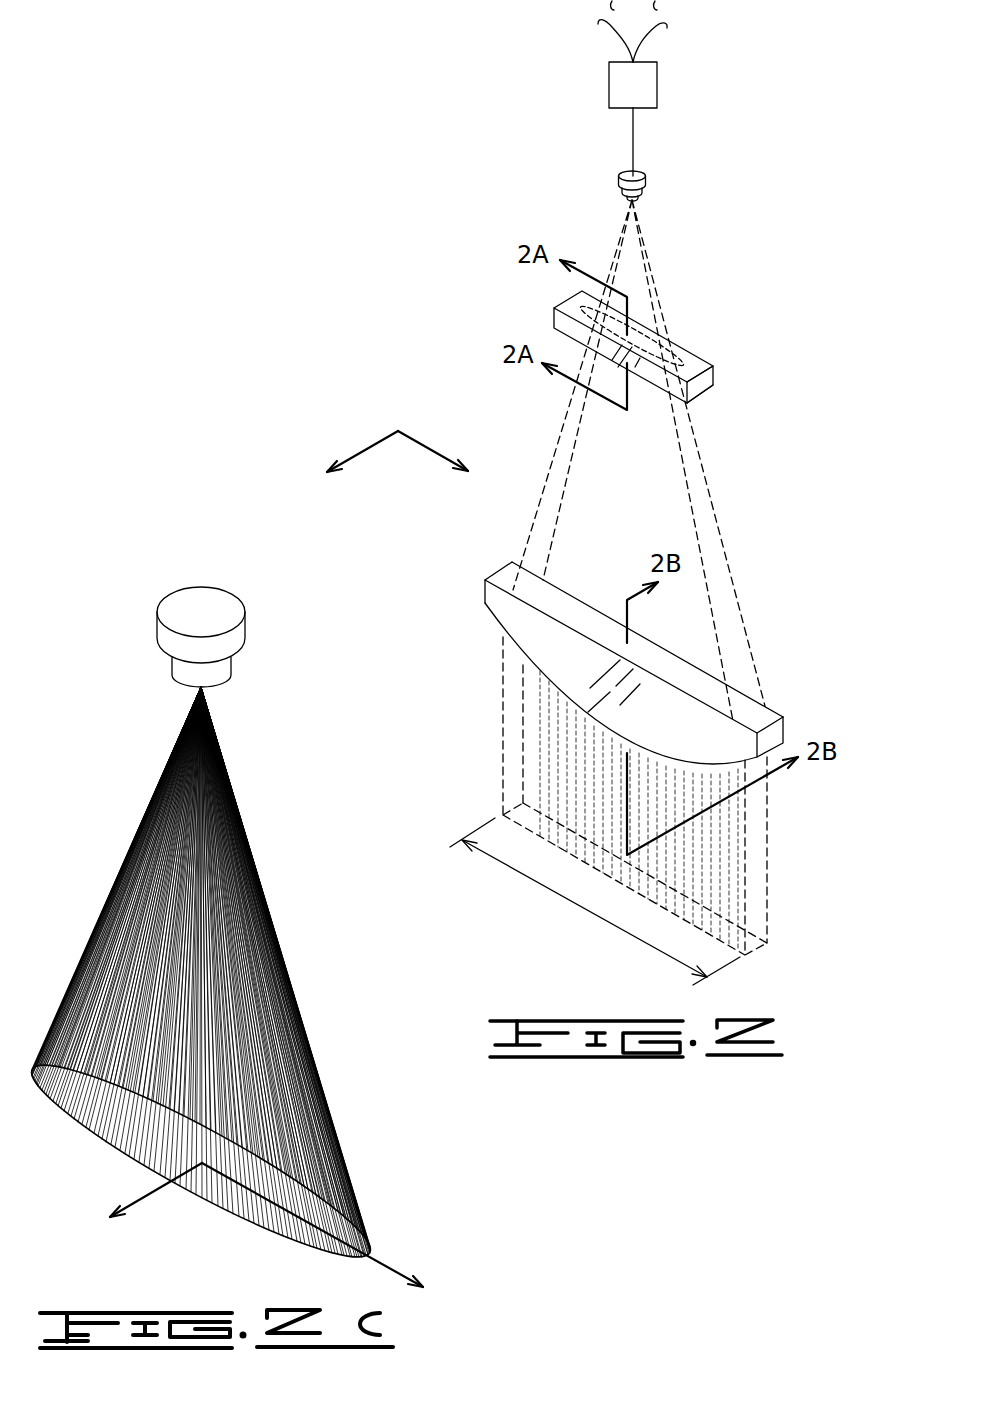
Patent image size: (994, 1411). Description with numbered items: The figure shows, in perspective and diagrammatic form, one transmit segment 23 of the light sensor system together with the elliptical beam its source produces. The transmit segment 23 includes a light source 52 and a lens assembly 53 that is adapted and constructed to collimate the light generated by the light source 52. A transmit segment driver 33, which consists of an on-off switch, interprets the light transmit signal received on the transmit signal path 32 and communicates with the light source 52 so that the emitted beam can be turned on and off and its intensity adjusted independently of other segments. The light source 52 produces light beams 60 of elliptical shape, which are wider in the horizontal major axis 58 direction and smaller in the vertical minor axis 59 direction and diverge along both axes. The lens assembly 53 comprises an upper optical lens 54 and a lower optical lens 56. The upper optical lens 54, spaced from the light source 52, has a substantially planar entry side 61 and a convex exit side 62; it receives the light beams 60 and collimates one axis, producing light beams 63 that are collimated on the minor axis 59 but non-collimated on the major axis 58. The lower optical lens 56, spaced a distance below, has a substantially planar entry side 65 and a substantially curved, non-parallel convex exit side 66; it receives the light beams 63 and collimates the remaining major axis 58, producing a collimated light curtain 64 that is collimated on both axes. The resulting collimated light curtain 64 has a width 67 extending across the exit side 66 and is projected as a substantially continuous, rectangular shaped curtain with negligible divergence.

In FIG. 2, the transmit segment 23 is at (430, 115).
In FIG. 2, the transmit signal path 32 is at (620, 34).
In FIG. 2, the transmit segment driver 33 is at (657, 72).
In FIG. 2, the light source 52 is at (642, 173).
In FIG. 2C, the light source 52 is at (177, 592).
In FIG. 2, the lens assembly 53 is at (817, 377).
In FIG. 2, the upper optical lens 54 is at (673, 360).
In FIG. 2, the lower optical lens 56 is at (590, 637).
In FIG. 2, the major axis 58 is at (427, 443).
In FIG. 2C, the major axis 58 is at (383, 1265).
In FIG. 2, the minor axis 59 is at (371, 443).
In FIG. 2C, the minor axis 59 is at (137, 1197).
In FIG. 2, the light beams 60 is at (657, 281).
In FIG. 2C, the light beams 60 is at (128, 852).
In FIG. 2, the entry side 61 is at (697, 362).
In FIG. 2, the exit side 62 is at (697, 400).
In FIG. 2, the light beams 63 is at (727, 557).
In FIG. 2, the collimated light curtain 64 is at (768, 850).
In FIG. 2, the entry side 65 is at (508, 560).
In FIG. 2, the exit side 66 is at (588, 683).
In FIG. 2, the width 67 is at (572, 905).